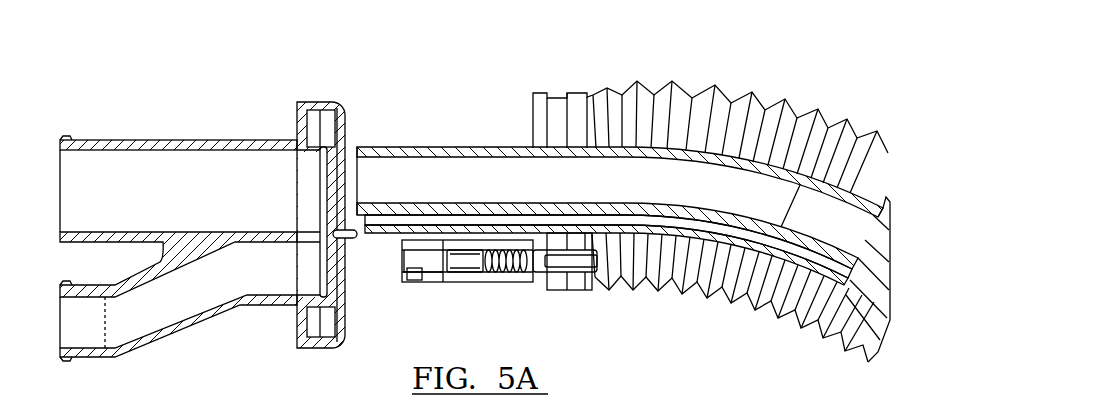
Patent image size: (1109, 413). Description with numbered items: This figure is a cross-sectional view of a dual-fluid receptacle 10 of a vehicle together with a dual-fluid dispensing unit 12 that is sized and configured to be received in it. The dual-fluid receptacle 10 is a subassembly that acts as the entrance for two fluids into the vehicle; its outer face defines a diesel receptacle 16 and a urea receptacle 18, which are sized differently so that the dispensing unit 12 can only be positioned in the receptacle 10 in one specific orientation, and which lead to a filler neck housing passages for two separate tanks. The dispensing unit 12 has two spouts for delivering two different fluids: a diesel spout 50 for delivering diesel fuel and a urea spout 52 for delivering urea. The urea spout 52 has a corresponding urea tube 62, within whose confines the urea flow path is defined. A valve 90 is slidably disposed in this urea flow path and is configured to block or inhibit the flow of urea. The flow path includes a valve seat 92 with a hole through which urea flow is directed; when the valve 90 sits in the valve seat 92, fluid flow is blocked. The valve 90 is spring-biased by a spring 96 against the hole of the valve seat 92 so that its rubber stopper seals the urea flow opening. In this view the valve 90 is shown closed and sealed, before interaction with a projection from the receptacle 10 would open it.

The dual-fluid receptacle 10 is at (208, 205).
The dual-fluid dispensing unit 12 is at (732, 61).
The diesel receptacle 16 is at (282, 185).
The urea receptacle 18 is at (298, 263).
The diesel spout 50 is at (425, 144).
The urea spout 52 is at (447, 284).
The urea tube 62 is at (514, 274).
The valve 90 is at (470, 263).
The valve seat 92 is at (437, 248).
The spring 96 is at (515, 257).